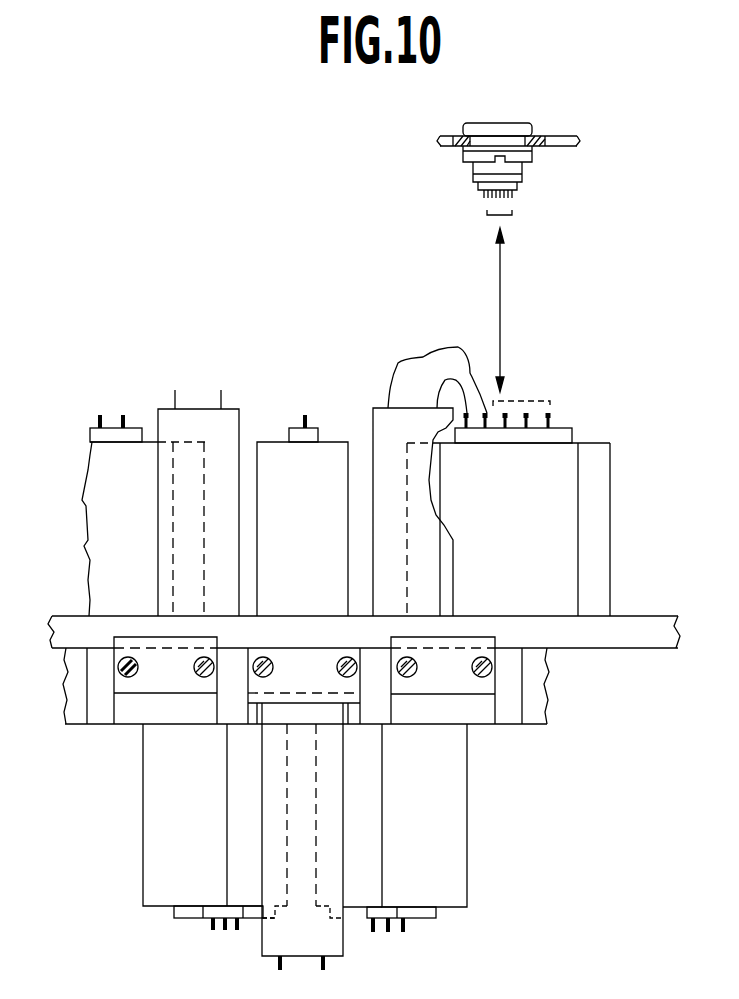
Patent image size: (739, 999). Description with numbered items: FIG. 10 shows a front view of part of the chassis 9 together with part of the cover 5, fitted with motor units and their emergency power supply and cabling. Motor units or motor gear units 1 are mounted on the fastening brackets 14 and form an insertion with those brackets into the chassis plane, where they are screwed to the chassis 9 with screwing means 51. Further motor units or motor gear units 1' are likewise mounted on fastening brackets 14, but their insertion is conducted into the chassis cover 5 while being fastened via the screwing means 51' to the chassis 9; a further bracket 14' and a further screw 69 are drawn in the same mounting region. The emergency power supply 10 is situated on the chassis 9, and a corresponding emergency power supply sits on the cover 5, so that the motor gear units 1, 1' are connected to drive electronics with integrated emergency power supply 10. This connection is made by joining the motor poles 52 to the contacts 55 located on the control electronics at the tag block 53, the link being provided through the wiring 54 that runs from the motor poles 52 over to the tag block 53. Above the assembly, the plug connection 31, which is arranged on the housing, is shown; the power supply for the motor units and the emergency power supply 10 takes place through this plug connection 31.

The motor gear unit 1 is at (312, 848).
The motor gear unit 1' is at (387, 513).
The cover 5 is at (637, 638).
The chassis 9 is at (98, 713).
The emergency power supply 10 is at (598, 456).
The fastening bracket 14 is at (304, 675).
The mounting cap 14' is at (274, 700).
The plug connection 31 is at (527, 131).
The screwing means 51 is at (339, 651).
The screwing means 51' is at (531, 676).
The motor poles 52 is at (387, 397).
The tag block 53 is at (562, 438).
The wiring 54 is at (407, 360).
The contacts 55 is at (551, 418).
The screw 69 is at (412, 673).